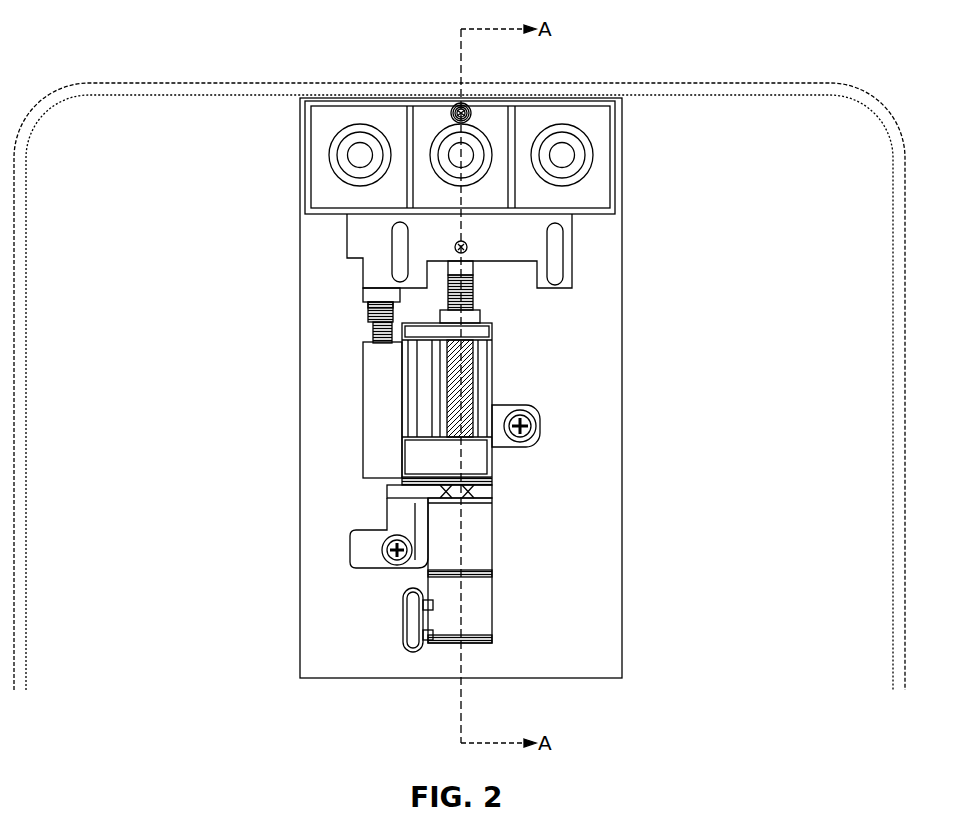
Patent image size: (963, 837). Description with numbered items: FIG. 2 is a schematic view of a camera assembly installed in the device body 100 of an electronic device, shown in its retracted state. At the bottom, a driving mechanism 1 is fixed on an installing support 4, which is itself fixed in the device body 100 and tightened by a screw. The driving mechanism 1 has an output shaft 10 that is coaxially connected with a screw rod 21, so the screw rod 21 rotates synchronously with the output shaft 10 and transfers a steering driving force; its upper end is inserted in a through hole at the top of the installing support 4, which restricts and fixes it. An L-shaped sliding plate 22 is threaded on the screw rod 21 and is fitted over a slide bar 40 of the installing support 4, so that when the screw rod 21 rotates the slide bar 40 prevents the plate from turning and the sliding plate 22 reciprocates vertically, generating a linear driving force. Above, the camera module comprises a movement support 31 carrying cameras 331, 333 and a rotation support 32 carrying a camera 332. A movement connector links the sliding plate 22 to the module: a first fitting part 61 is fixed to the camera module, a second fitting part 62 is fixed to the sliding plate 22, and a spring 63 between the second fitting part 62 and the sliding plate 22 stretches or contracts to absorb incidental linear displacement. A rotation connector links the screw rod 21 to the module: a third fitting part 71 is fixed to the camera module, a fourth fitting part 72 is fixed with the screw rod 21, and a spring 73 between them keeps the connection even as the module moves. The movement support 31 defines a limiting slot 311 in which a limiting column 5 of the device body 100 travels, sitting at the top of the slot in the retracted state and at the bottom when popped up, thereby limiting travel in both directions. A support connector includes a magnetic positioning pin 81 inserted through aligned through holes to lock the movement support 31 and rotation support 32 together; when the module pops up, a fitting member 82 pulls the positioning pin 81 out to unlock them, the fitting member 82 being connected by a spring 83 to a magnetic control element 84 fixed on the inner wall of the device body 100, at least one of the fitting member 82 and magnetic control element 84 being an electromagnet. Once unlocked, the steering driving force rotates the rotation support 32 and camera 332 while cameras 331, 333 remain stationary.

The device body 100 is at (802, 90).
The driving mechanism 1 is at (470, 545).
The installing support 4 is at (478, 492).
The limiting column 5 is at (400, 230).
The output shaft 10 is at (440, 488).
The screw rod 21 is at (473, 395).
The sliding plate 22 is at (382, 435).
The movement support 31 is at (372, 268).
The limiting slot 311 is at (400, 248).
The rotation support 32 is at (468, 245).
The slide bar 40 is at (423, 380).
The first fitting part 61 is at (370, 293).
The second fitting part 62 is at (370, 307).
The spring 63 is at (372, 332).
The third fitting part 71 is at (474, 270).
The fourth fitting part 72 is at (474, 287).
The spring 73 is at (480, 305).
The positioning pin 81 is at (525, 228).
The fitting member 82 is at (471, 114).
The spring 83 is at (461, 113).
The magnetic control element 84 is at (461, 113).
The camera 331 is at (328, 131).
The camera 332 is at (427, 188).
The camera 333 is at (595, 163).